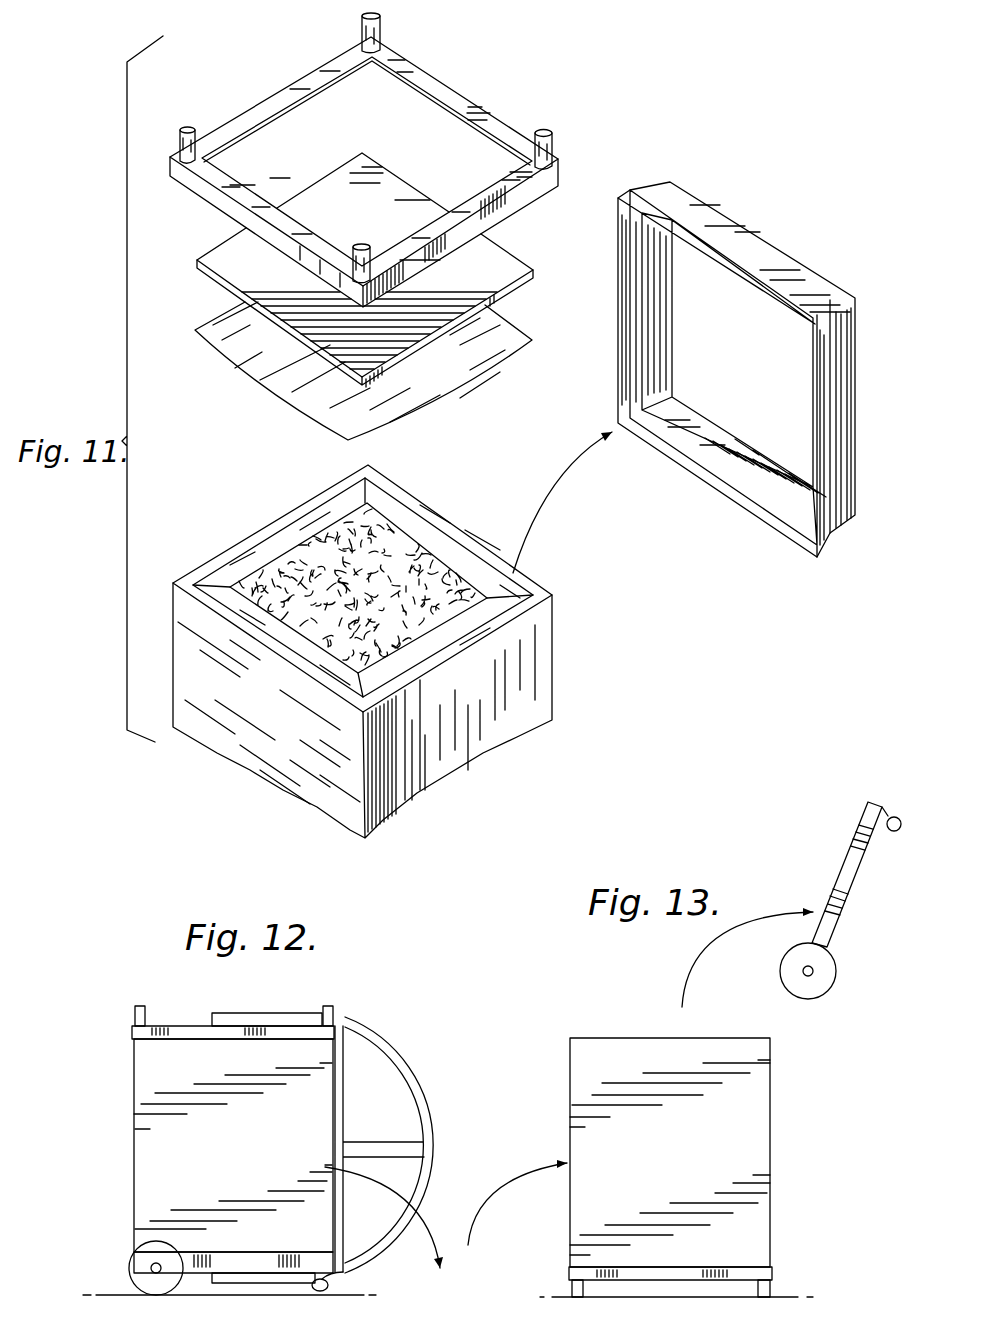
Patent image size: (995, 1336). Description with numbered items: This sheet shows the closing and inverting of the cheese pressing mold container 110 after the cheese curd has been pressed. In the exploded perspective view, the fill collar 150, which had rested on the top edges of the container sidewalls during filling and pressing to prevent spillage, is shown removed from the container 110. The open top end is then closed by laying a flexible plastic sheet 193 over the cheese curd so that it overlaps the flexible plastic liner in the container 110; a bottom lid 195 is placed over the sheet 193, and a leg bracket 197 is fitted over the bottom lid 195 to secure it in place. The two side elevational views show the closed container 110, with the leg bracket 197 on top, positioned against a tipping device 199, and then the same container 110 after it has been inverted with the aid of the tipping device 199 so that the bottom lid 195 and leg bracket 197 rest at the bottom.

In FIG. 11, the pressing mold container 110 is at (548, 689).
In FIG. 12, the pressing mold container 110 is at (134, 1141).
In FIG. 13, the pressing mold container 110 is at (768, 1088).
In FIG. 11, the fill collar 150 is at (737, 247).
In FIG. 11, the flexible plastic sheet 193 is at (272, 372).
In FIG. 11, the bottom lid 195 is at (231, 248).
In FIG. 11, the leg bracket 197 is at (266, 100).
In FIG. 12, the leg bracket 197 is at (132, 1027).
In FIG. 13, the leg bracket 197 is at (770, 1277).
In FIG. 12, the tipping device 199 is at (393, 1052).